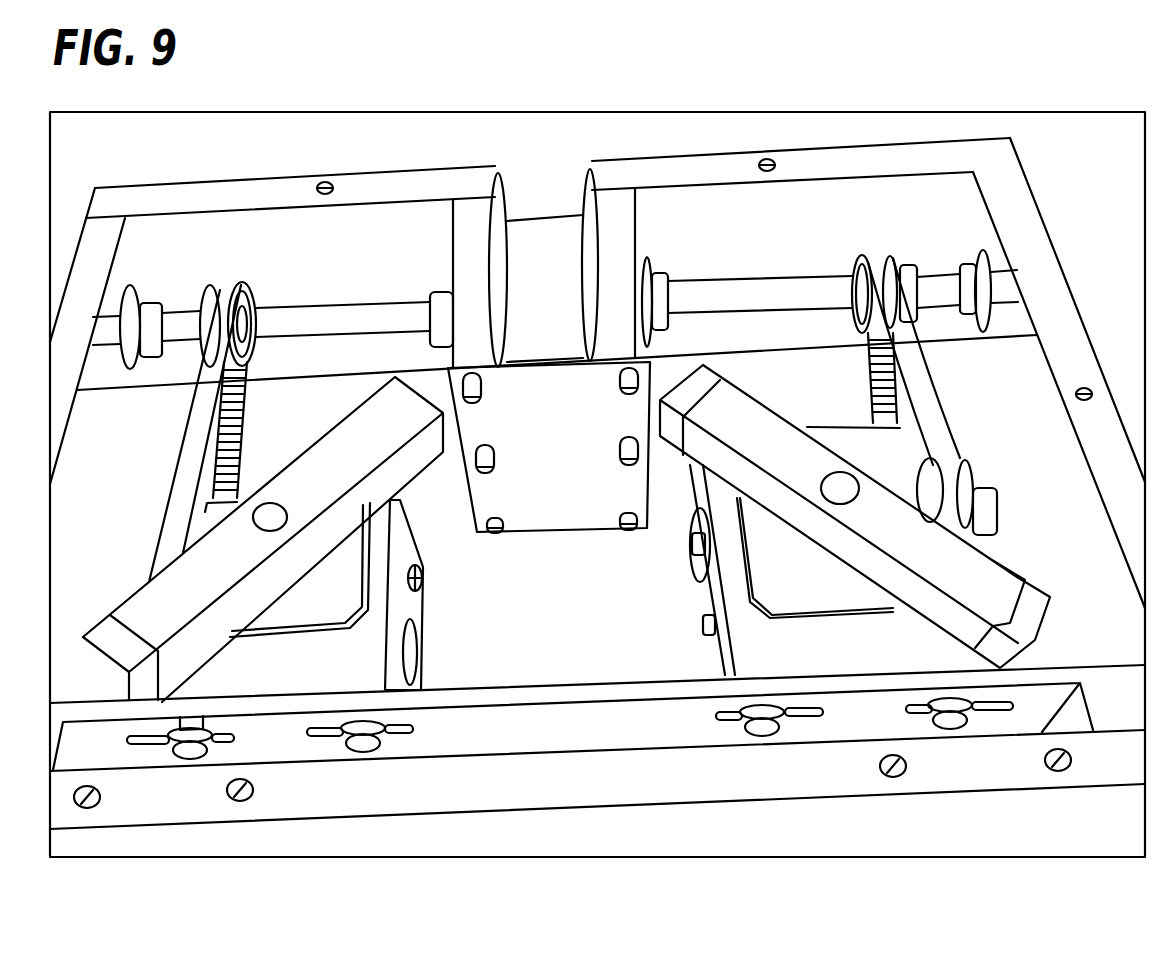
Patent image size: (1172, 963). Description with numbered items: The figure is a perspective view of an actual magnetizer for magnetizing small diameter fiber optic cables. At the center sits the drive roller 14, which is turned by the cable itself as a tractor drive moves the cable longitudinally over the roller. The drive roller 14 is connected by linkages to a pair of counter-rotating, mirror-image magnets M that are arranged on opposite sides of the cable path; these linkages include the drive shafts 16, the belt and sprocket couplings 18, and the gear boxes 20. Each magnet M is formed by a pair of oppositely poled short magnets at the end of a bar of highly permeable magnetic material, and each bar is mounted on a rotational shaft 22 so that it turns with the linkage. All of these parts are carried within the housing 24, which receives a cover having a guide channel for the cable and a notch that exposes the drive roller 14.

The drive roller 14 is at (563, 332).
The drive shafts 16 is at (770, 282).
The belt and sprocket couplings 18 is at (249, 441).
The gear boxes 20 is at (695, 638).
The rotational shaft 22 is at (690, 552).
The housing 24 is at (803, 862).
The magnets M is at (348, 405).